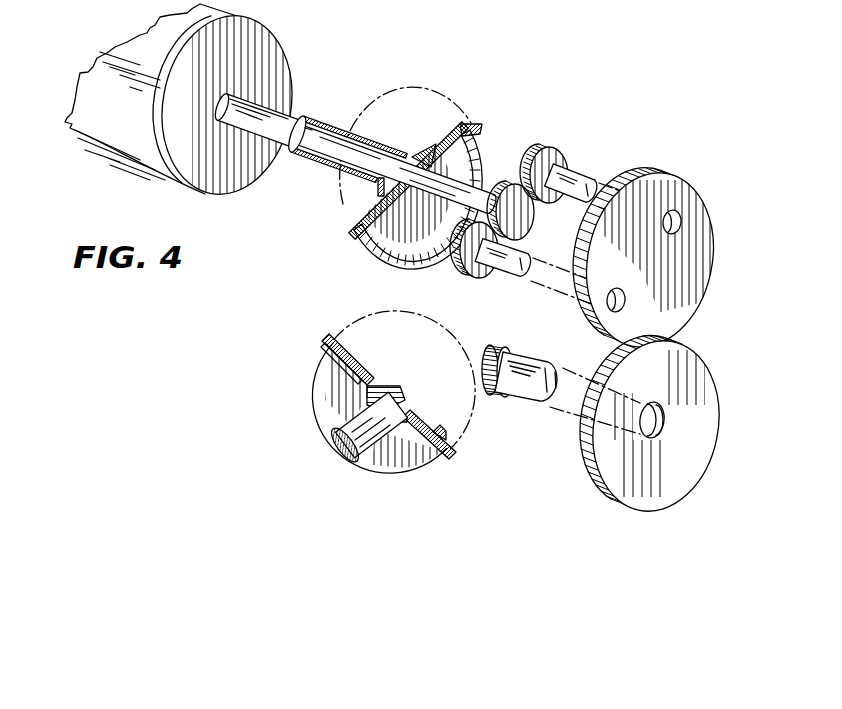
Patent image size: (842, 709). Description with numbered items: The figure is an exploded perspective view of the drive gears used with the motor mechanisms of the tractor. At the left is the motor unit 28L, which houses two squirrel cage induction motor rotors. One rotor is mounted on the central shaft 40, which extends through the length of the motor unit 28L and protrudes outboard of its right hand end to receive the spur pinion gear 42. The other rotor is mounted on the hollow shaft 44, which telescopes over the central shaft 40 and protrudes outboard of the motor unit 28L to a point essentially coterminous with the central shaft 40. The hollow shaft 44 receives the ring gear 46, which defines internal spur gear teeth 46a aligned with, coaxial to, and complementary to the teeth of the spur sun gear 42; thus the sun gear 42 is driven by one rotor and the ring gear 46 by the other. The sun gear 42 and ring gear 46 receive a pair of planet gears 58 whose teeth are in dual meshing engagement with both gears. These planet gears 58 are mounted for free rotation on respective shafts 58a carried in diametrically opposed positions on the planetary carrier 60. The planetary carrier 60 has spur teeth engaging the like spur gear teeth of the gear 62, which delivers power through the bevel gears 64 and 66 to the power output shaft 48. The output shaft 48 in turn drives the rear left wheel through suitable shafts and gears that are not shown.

The motor unit 28L is at (277, 42).
The hollow shaft 44 is at (292, 122).
The central shaft 40 is at (323, 153).
The ring gear 46 is at (431, 184).
The internal spur gear teeth 46a is at (490, 142).
The spur pinion gear 42 is at (525, 213).
The planet gears 58 is at (555, 225).
The shafts 58a is at (573, 182).
The planetary carrier 60 is at (688, 195).
The gear 62 is at (697, 370).
The bevel gear 64 is at (495, 378).
The bevel gear 66 is at (385, 399).
The power output shaft 48 is at (337, 432).